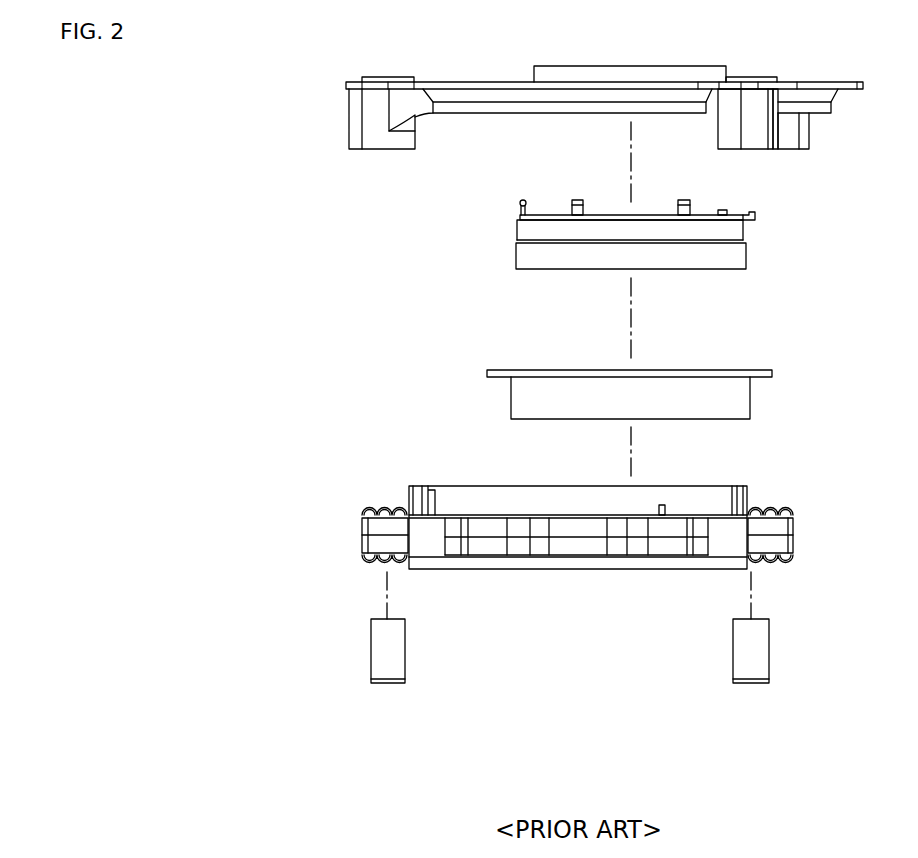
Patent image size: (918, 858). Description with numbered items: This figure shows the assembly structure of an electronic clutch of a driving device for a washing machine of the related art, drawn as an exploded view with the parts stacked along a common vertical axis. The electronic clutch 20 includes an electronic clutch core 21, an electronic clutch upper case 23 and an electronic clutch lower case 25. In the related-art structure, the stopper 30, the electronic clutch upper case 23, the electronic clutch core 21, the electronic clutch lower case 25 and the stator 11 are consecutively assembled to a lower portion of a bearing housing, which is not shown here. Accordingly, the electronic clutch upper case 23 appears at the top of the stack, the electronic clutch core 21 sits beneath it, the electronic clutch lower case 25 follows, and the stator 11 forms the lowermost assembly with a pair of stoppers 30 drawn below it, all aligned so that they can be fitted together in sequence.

The stator 11 is at (331, 537).
The electronic clutch 20 is at (282, 113).
The electronic clutch core 21 is at (525, 256).
The electronic clutch upper case 23 is at (348, 114).
The electronic clutch lower case 25 is at (523, 399).
The stopper 30 is at (388, 677).